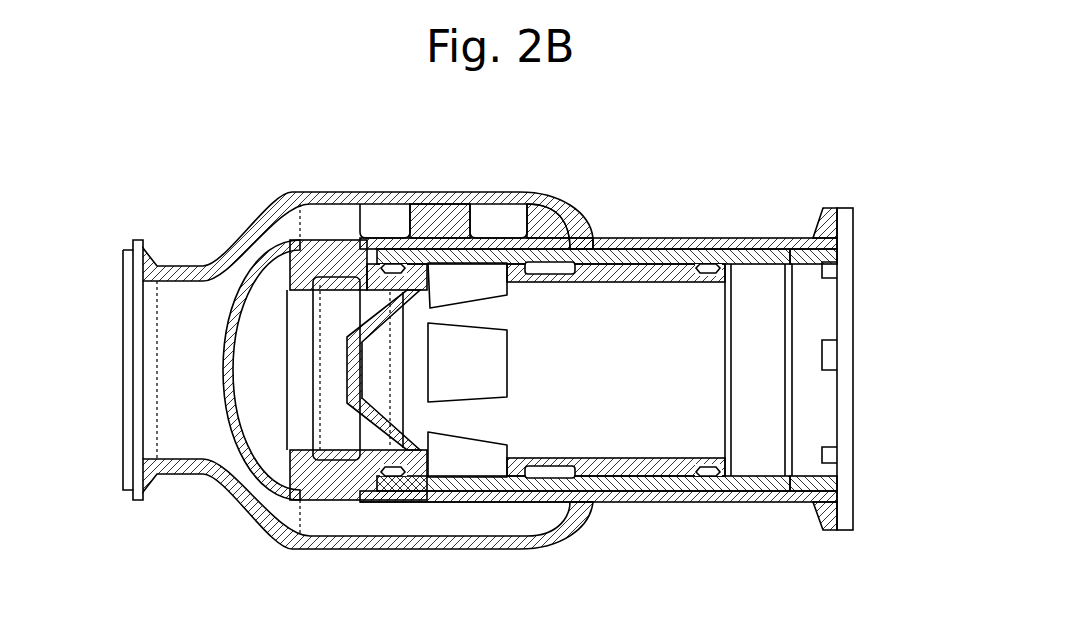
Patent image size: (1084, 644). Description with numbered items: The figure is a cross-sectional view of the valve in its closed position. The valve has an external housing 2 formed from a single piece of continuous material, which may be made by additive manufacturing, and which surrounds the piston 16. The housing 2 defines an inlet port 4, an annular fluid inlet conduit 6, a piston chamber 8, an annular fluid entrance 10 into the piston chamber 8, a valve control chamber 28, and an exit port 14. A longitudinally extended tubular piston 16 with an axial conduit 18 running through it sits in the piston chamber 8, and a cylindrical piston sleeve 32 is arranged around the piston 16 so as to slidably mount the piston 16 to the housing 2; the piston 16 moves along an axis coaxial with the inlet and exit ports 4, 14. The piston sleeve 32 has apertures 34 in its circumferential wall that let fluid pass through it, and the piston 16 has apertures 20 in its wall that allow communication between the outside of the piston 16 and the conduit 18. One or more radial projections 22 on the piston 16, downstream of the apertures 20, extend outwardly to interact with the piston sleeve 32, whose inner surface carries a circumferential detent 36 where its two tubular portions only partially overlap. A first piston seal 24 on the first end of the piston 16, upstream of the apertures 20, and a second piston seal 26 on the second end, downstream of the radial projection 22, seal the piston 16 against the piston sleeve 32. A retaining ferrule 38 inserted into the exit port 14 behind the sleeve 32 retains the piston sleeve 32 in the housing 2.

The housing 2 is at (318, 163).
The inlet port 4 is at (108, 348).
The annular fluid inlet conduit 6 is at (263, 240).
The piston chamber 8 is at (763, 453).
The annular fluid entrance 10 is at (532, 505).
The exit port 14 is at (886, 349).
The piston 16 is at (620, 466).
The axial conduit 18 is at (667, 410).
The apertures 20 is at (448, 463).
The radial projections 22 is at (512, 260).
The first piston seal 24 is at (397, 476).
The second piston seal 26 is at (710, 268).
The valve control chamber 28 is at (267, 415).
The piston sleeve 32 is at (418, 200).
The apertures 34 is at (527, 258).
The circumferential detent 36 is at (613, 272).
The retaining ferrule 38 is at (807, 253).